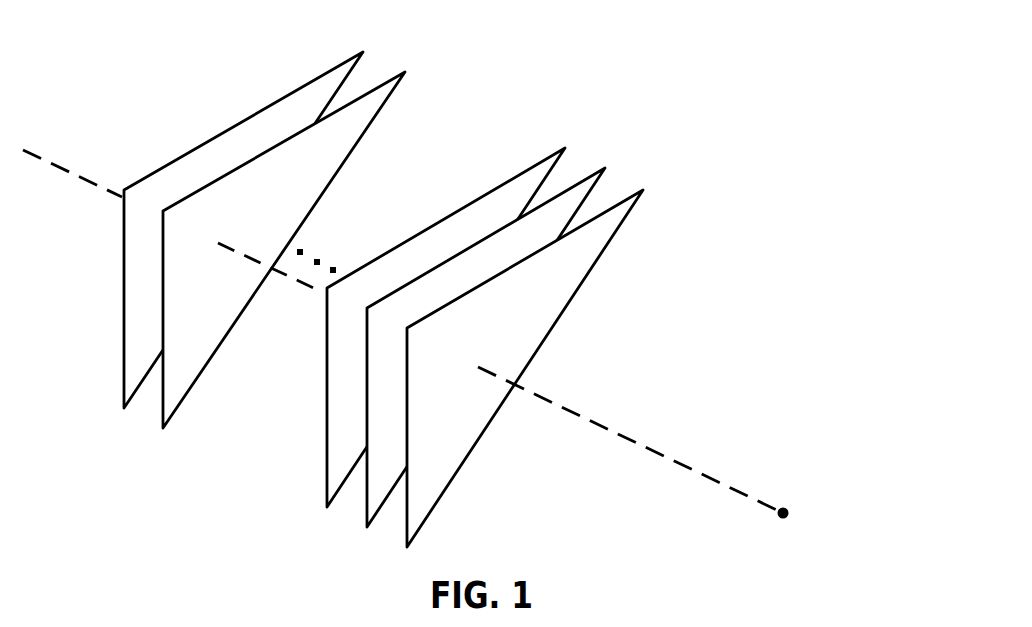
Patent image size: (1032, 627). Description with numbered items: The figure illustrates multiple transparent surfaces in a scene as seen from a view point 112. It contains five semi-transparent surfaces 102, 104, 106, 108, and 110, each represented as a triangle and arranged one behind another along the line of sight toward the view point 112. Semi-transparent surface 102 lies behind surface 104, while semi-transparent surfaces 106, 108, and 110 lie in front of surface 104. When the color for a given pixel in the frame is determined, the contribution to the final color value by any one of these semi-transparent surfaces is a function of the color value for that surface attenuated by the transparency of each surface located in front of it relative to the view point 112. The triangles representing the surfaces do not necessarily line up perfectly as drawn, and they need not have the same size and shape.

The semi-transparent surface 102 is at (363, 52).
The semi-transparent surface 104 is at (405, 72).
The semi-transparent surface 106 is at (565, 148).
The semi-transparent surface 108 is at (605, 168).
The semi-transparent surface 110 is at (643, 190).
The view point 112 is at (783, 513).